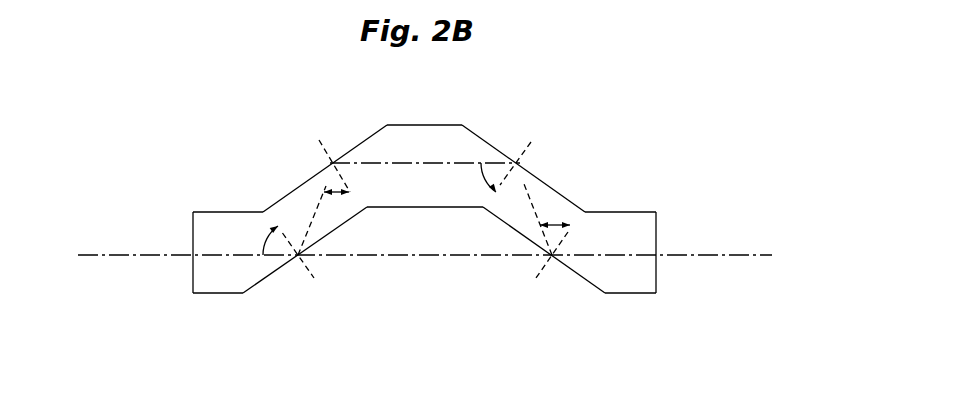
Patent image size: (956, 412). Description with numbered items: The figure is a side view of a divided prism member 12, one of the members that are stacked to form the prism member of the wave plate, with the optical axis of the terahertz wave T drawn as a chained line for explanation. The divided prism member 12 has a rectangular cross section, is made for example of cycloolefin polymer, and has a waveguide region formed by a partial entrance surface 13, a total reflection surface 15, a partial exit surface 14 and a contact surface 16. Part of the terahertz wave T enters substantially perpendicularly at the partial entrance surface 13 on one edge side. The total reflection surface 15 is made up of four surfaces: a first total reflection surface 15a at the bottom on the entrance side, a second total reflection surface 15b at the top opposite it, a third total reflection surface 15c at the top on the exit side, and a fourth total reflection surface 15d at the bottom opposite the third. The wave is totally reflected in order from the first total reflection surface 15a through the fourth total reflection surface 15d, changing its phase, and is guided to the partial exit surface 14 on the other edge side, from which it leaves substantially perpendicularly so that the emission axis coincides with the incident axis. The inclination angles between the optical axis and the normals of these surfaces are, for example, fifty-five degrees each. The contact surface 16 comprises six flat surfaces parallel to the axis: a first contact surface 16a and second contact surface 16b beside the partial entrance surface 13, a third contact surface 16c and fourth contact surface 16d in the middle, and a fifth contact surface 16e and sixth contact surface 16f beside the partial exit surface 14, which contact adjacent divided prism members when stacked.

The divided prism member 12 is at (431, 221).
The partial entrance surface 13 is at (193, 227).
The partial exit surface 14 is at (656, 230).
The total reflection surface 15 is at (437, 211).
The first total reflection surface 15a is at (335, 230).
The second total reflection surface 15b is at (365, 140).
The third total reflection surface 15c is at (582, 155).
The fourth total reflection surface 15d is at (551, 263).
The contact surface 16 is at (450, 225).
The first contact surface 16a is at (220, 293).
The second contact surface 16b is at (228, 212).
The third contact surface 16c is at (423, 207).
The fourth contact surface 16d is at (435, 125).
The fifth contact surface 16e is at (632, 293).
The sixth contact surface 16f is at (631, 212).
The terahertz wave T is at (115, 257).